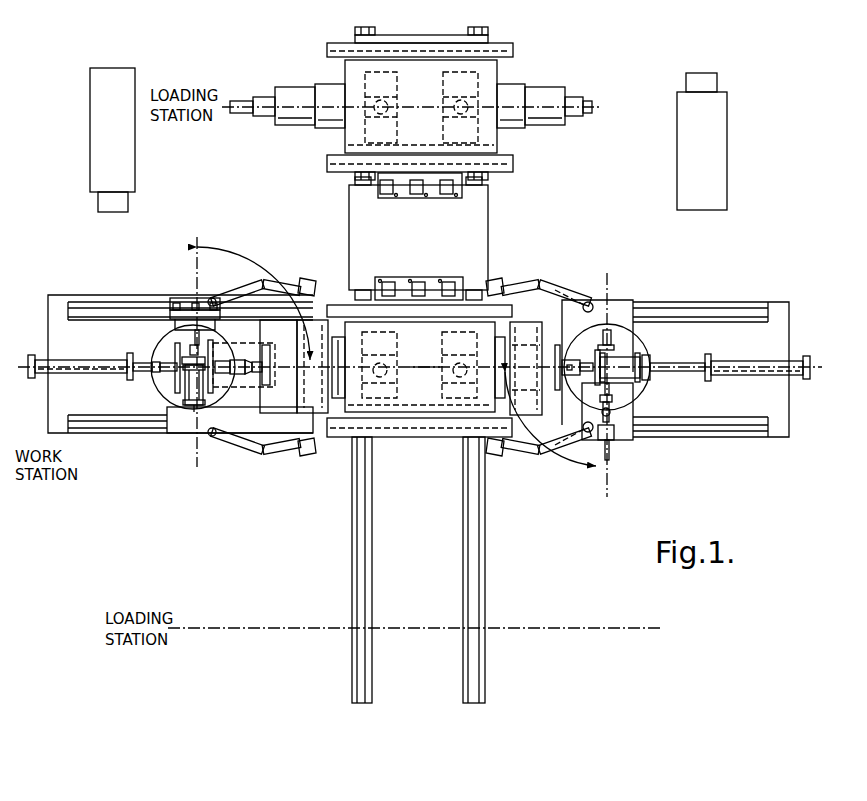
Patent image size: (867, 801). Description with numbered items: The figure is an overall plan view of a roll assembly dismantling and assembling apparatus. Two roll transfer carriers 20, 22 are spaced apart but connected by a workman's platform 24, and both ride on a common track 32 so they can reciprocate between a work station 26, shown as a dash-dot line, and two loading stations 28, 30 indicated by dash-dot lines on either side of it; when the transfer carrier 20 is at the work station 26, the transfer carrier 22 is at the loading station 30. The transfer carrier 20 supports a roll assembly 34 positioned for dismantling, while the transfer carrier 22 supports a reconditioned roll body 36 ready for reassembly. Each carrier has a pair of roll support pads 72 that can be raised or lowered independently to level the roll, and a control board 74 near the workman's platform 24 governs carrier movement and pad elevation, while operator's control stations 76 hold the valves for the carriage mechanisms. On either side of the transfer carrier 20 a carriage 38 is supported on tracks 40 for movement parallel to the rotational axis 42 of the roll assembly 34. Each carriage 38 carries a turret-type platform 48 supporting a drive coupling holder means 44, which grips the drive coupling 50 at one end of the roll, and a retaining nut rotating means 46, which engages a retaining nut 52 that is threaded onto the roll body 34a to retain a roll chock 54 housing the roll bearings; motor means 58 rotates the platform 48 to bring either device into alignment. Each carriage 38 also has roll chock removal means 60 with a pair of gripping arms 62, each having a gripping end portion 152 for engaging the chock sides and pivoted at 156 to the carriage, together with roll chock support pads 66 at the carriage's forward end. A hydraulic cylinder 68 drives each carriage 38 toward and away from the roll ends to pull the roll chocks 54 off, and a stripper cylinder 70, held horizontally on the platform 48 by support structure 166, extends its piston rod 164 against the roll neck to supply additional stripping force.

The roll transfer carrier 20 is at (401, 440).
The roll transfer carrier 22 is at (416, 31).
The workman's platform 24 is at (436, 231).
The work station 26 is at (40, 358).
The loading station 28 is at (266, 628).
The loading station 30 is at (597, 103).
The common track 32 is at (463, 675).
The roll assembly 34 is at (471, 318).
The roll body 34a is at (365, 405).
The roll body 36 is at (521, 85).
The carriage 38 is at (170, 436).
The tracks 40 is at (736, 310).
The rotational axis 42 is at (425, 366).
The drive coupling holder means 44 is at (238, 340).
The retaining nut rotating means 46 is at (186, 296).
The turret-type platform 48 is at (163, 385).
The drive coupling 50 is at (265, 395).
The retaining nut 52 is at (314, 367).
The roll chock 54 is at (331, 340).
The motor means 58 is at (150, 361).
The roll chock removal means 60 is at (291, 254).
The gripping arms 62 is at (262, 282).
The roll chock support pads 66 is at (291, 341).
The hydraulic cylinder 68 is at (86, 357).
The stripper cylinder 70 is at (182, 403).
The roll support pads 72 is at (400, 100).
The control board 74 is at (403, 200).
The operator's control station 76 is at (101, 65).
The gripping end portion 152 is at (306, 278).
The pivot 156 is at (198, 322).
The piston rod 164 is at (155, 357).
The support structure 166 is at (622, 347).